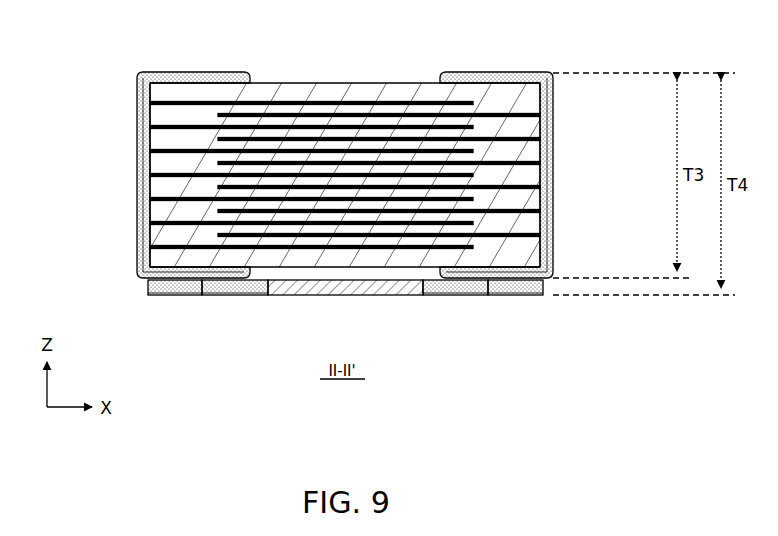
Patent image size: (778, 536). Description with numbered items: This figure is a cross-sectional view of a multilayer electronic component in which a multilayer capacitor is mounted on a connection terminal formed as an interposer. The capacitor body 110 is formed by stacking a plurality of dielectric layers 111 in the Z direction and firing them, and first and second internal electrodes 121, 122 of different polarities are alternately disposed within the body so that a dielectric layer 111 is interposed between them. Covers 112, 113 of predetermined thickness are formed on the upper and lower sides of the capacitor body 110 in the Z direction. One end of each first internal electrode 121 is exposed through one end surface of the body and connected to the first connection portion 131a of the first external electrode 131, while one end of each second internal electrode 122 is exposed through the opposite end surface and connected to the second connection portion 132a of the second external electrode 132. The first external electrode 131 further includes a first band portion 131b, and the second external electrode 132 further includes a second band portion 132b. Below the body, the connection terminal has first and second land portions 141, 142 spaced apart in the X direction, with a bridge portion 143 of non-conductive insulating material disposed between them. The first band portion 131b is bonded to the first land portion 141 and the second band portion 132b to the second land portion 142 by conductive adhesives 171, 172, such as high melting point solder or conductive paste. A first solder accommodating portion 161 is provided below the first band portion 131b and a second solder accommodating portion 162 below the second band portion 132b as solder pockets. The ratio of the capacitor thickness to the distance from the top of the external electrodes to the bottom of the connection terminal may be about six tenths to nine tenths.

The capacitor body 110 is at (347, 84).
The dielectric layer 111 is at (555, 192).
The cover 112 is at (305, 86).
The cover 113 is at (340, 297).
The first internal electrode 121 is at (250, 74).
The second internal electrode 122 is at (413, 85).
The first external electrode 131 is at (68, 232).
The first connection portion 131a is at (137, 252).
The first band portion 131b is at (140, 279).
The second external electrode 132 is at (622, 218).
The second connection portion 132a is at (555, 216).
The second band portion 132b is at (548, 273).
The first land portion 141 is at (216, 297).
The second land portion 142 is at (467, 297).
The bridge portion 143 is at (278, 297).
The first solder accommodating portion 161 is at (165, 297).
The second solder accommodating portion 162 is at (512, 297).
The conductive adhesive 171 is at (188, 297).
The conductive adhesive 172 is at (480, 297).